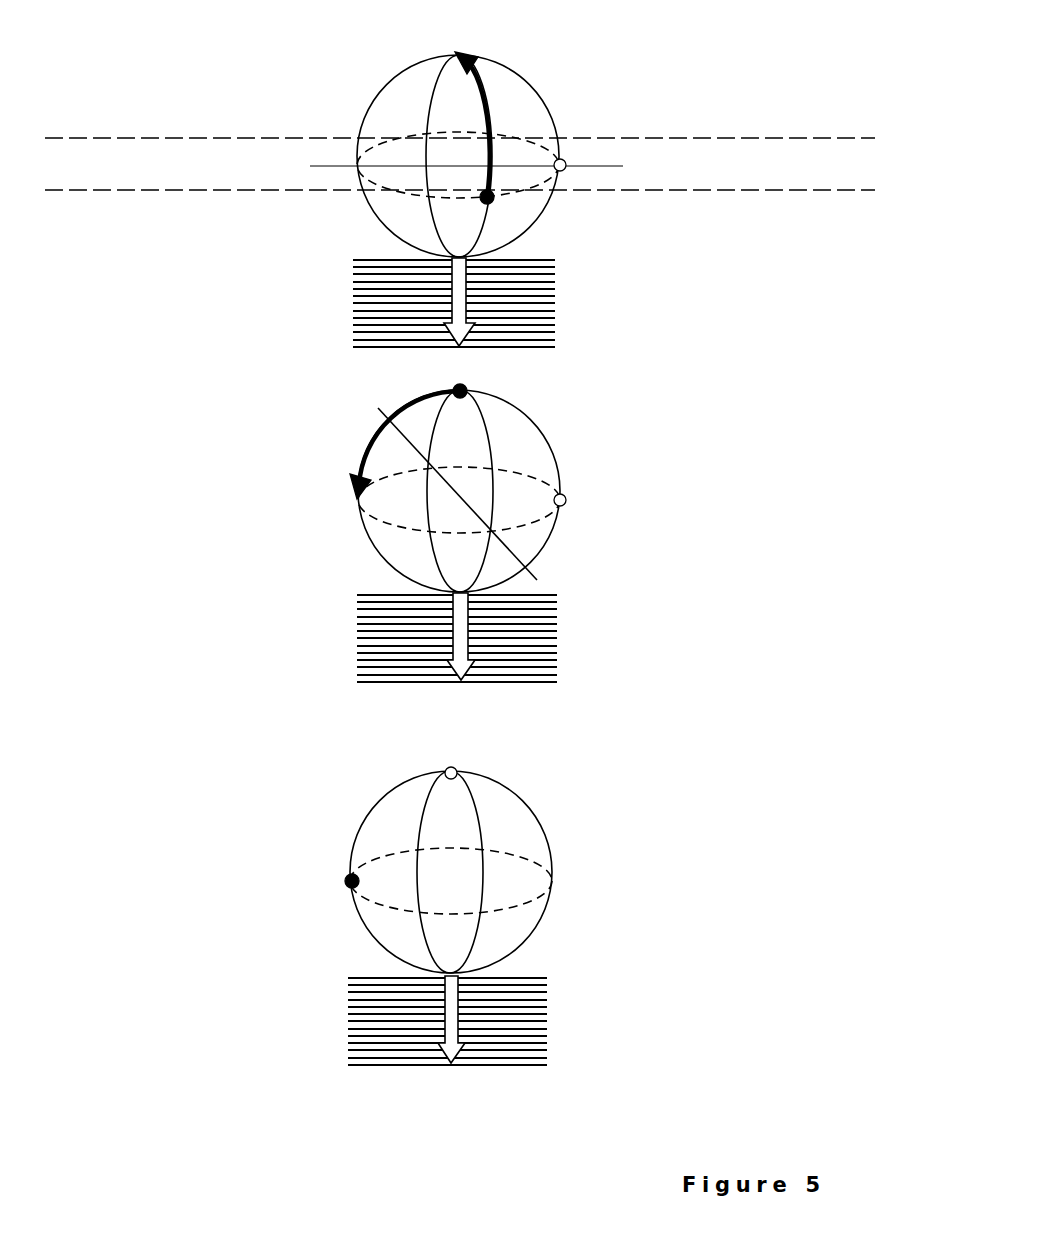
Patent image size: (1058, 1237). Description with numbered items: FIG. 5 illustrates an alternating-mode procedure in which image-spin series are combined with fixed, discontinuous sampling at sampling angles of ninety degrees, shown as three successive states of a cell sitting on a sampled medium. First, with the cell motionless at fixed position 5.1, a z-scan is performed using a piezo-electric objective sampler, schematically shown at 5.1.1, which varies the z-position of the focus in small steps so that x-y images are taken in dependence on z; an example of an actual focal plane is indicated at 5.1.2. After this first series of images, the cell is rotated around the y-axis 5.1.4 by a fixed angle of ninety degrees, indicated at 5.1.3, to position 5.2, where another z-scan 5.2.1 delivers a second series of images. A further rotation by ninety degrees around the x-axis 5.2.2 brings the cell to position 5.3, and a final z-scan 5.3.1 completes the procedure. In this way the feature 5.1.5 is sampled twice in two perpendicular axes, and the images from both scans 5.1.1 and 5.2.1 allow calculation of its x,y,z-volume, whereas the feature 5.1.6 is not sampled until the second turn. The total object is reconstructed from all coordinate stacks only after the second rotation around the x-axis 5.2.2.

The fixed position 5.1 is at (460, 201).
The position 5.2 is at (500, 542).
The position 5.3 is at (474, 921).
The piezo-electric objective sampler 5.1.1 is at (385, 285).
The actual focal plane 5.1.2 is at (870, 170).
The fixed angle of 90° 5.1.3 is at (490, 118).
The y-axis 5.1.4 is at (487, 205).
The feature 5.1.5 is at (487, 197).
The feature 5.1.6 is at (565, 161).
The z-scan 5.2.1 is at (384, 632).
The x-axis 5.2.2 is at (533, 573).
The z-scan 5.3.1 is at (382, 1012).